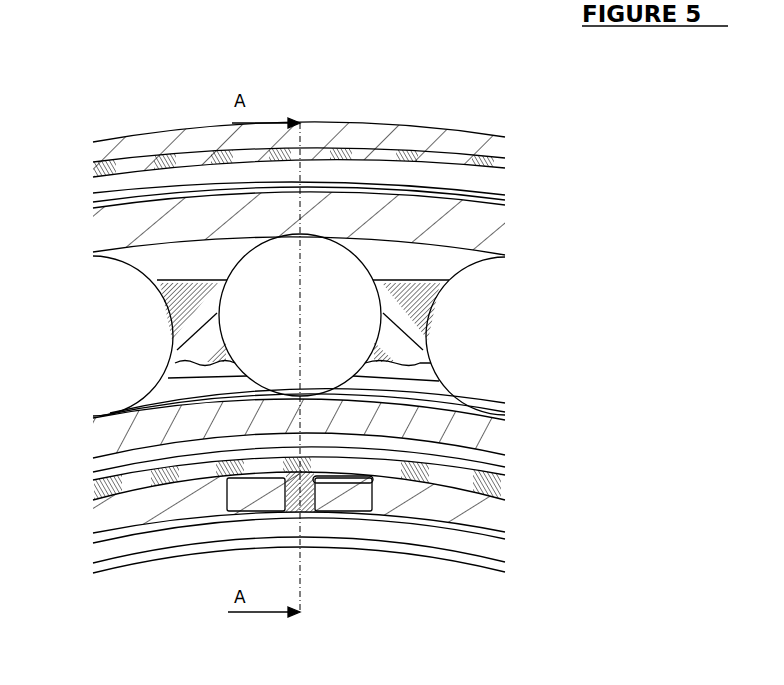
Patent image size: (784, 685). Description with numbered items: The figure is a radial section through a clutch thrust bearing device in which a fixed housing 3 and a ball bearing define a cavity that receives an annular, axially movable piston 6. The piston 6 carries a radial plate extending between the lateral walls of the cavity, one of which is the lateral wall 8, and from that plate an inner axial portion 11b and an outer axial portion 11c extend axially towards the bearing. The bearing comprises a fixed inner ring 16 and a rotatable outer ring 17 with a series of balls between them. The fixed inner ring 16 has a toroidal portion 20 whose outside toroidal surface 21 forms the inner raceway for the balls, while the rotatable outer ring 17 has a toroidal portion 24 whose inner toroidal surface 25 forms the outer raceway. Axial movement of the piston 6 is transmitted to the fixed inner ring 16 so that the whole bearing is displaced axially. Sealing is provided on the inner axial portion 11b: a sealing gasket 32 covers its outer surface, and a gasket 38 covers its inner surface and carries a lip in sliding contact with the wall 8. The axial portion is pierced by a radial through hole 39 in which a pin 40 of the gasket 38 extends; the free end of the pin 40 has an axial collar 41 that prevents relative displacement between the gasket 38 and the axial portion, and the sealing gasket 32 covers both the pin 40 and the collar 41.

The fixed housing 3 is at (447, 553).
The axially movable piston 6 is at (505, 497).
The lateral wall 8 is at (462, 545).
The inner axial portion 11b is at (497, 524).
The outer axial portion 11c is at (505, 157).
The fixed inner ring 16 is at (377, 423).
The toroidal portion 20 is at (505, 445).
The rotatable outer ring 17 is at (377, 218).
The toroidal portion 24 is at (505, 230).
The outside toroidal surface 21 is at (505, 375).
The inner toroidal surface 25 is at (505, 278).
The sealing gasket 32 is at (148, 478).
The gasket 38 is at (392, 482).
The through hole 39 is at (285, 433).
The pin 40 is at (258, 485).
The axial collar 41 is at (338, 482).